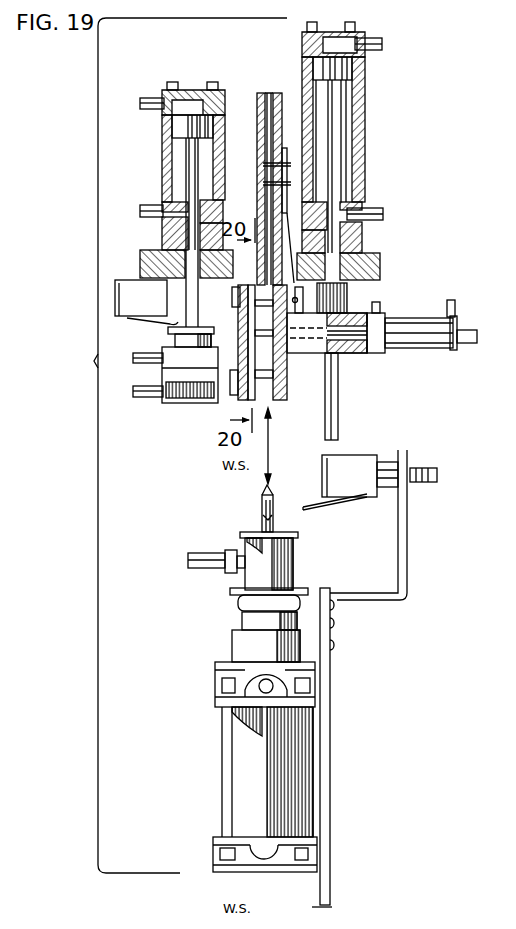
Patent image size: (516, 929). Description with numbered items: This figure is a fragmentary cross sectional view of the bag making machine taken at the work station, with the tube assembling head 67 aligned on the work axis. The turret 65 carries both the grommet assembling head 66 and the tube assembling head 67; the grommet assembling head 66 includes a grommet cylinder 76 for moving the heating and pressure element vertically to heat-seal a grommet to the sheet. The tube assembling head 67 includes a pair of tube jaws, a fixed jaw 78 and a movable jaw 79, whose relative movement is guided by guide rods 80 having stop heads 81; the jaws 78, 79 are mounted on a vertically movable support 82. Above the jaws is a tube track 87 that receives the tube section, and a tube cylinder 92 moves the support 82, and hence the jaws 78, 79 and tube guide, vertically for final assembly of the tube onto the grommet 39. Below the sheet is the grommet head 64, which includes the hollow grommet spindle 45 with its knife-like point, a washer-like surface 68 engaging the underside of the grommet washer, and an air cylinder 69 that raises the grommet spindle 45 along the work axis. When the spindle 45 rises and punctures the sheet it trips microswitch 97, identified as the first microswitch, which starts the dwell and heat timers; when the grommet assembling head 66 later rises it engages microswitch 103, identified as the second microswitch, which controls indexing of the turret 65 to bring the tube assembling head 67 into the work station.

The tube track 87 is at (263, 95).
The tube cylinder 92 is at (358, 106).
The turret 65 is at (364, 167).
The grommet assembling head 66 is at (174, 204).
The grommet cylinder 76 is at (162, 180).
The tube assembling head 67 is at (366, 183).
The guide rods 80 is at (237, 302).
The stop heads 81 is at (233, 370).
The vertically movable support 82 is at (357, 312).
The microswitch 103 is at (118, 318).
The movable jaw 79 is at (234, 402).
The fixed jaw 78 is at (288, 402).
The grommet spindle 45 is at (262, 489).
The grommet 39 is at (278, 502).
The washer-like surface 68 is at (244, 534).
The microswitch 97 is at (353, 458).
The grommet head 64 is at (363, 676).
The air cylinder 69 is at (238, 765).